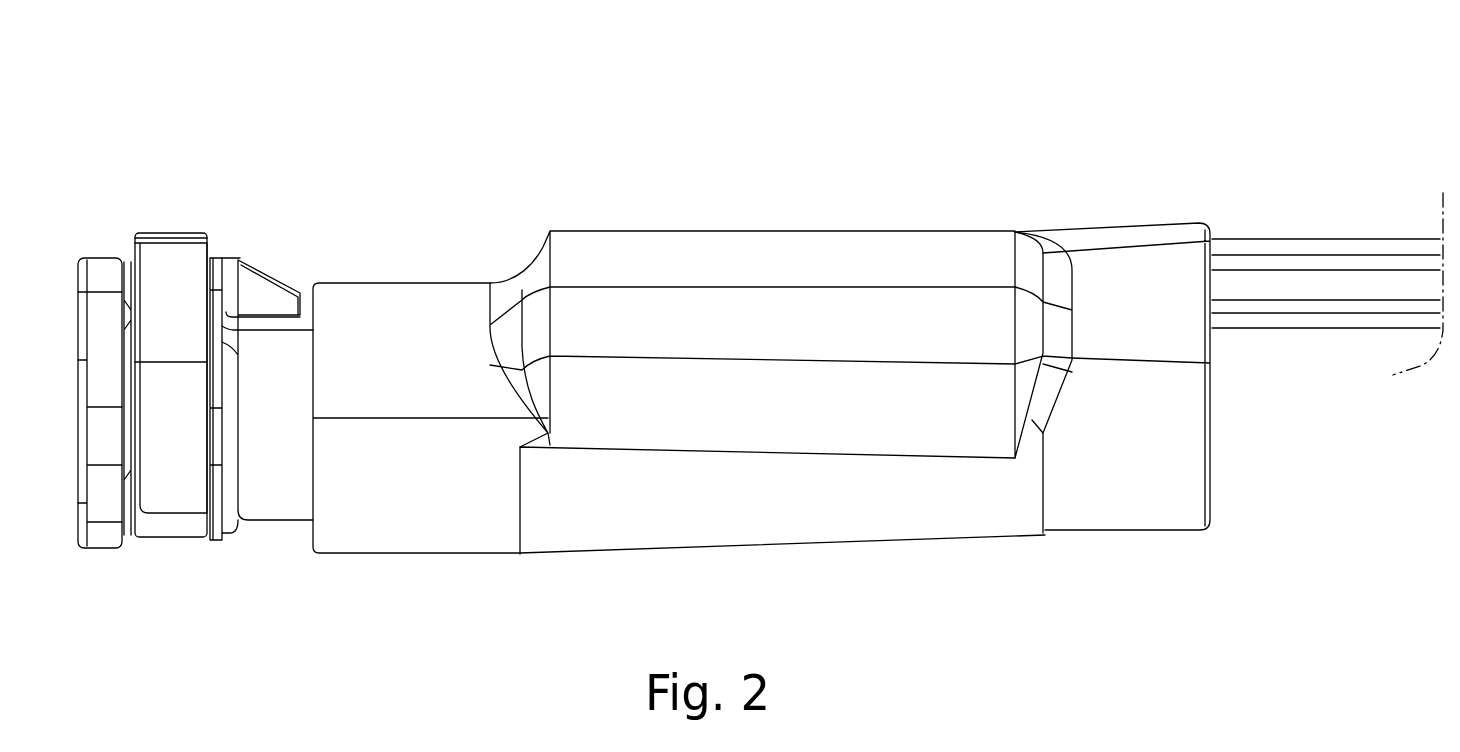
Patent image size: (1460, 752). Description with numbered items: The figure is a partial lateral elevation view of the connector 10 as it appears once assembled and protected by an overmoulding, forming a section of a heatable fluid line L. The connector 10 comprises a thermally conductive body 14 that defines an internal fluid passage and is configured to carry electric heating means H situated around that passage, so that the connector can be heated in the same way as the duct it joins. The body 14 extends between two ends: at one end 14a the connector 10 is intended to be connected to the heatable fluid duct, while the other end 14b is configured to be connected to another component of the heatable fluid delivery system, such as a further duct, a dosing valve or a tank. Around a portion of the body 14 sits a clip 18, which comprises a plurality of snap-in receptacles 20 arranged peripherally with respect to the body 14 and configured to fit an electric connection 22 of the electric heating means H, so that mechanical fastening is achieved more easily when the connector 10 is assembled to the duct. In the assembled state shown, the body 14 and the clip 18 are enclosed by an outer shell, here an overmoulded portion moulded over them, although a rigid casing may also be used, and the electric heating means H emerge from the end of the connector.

The connector 10 is at (644, 384).
The thermally conductive body 14 is at (268, 522).
The end 14a is at (1163, 495).
The other end 14b is at (102, 495).
The clip 18 is at (625, 553).
The snap-in receptacles 20 is at (625, 286).
The electric connection 22 is at (1120, 302).
The heatable fluid line L is at (760, 354).
The electric heating means H is at (1317, 238).